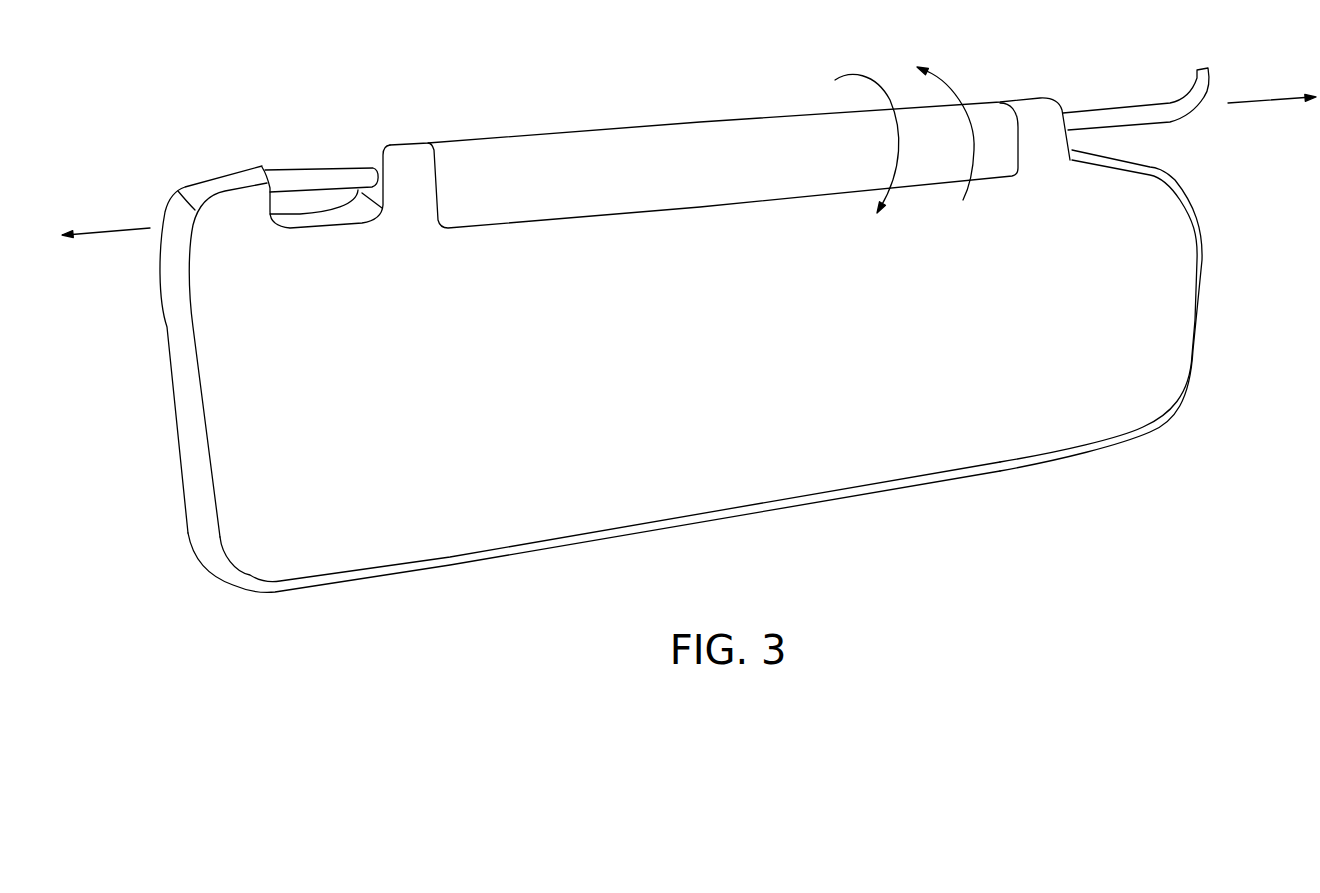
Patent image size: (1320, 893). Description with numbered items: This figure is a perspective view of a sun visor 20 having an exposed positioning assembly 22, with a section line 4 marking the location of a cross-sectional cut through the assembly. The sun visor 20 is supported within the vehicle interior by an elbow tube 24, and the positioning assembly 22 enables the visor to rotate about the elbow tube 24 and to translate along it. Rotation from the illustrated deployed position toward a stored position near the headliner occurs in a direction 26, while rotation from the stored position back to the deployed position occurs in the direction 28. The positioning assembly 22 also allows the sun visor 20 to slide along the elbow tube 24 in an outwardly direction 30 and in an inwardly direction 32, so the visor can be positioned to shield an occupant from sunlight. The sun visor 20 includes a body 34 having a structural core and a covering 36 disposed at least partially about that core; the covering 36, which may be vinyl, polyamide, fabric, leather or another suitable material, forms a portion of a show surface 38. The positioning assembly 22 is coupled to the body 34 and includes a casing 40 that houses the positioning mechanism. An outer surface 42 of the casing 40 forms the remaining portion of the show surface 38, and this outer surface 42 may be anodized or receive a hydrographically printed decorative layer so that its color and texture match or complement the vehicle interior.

The section line 4- 4 is at (760, 108).
The sun visor 20 is at (1124, 89).
The positioning assembly 22 is at (533, 262).
The elbow tube 24 is at (1172, 120).
The direction 26 is at (973, 105).
The direction 28 is at (876, 82).
The outwardly direction 30 is at (112, 228).
The inwardly direction 32 is at (1275, 99).
The body 34 is at (1040, 500).
The covering 36 is at (1173, 352).
The show surface 38 is at (938, 442).
The casing 40 is at (528, 170).
The outer surface 42 is at (588, 162).